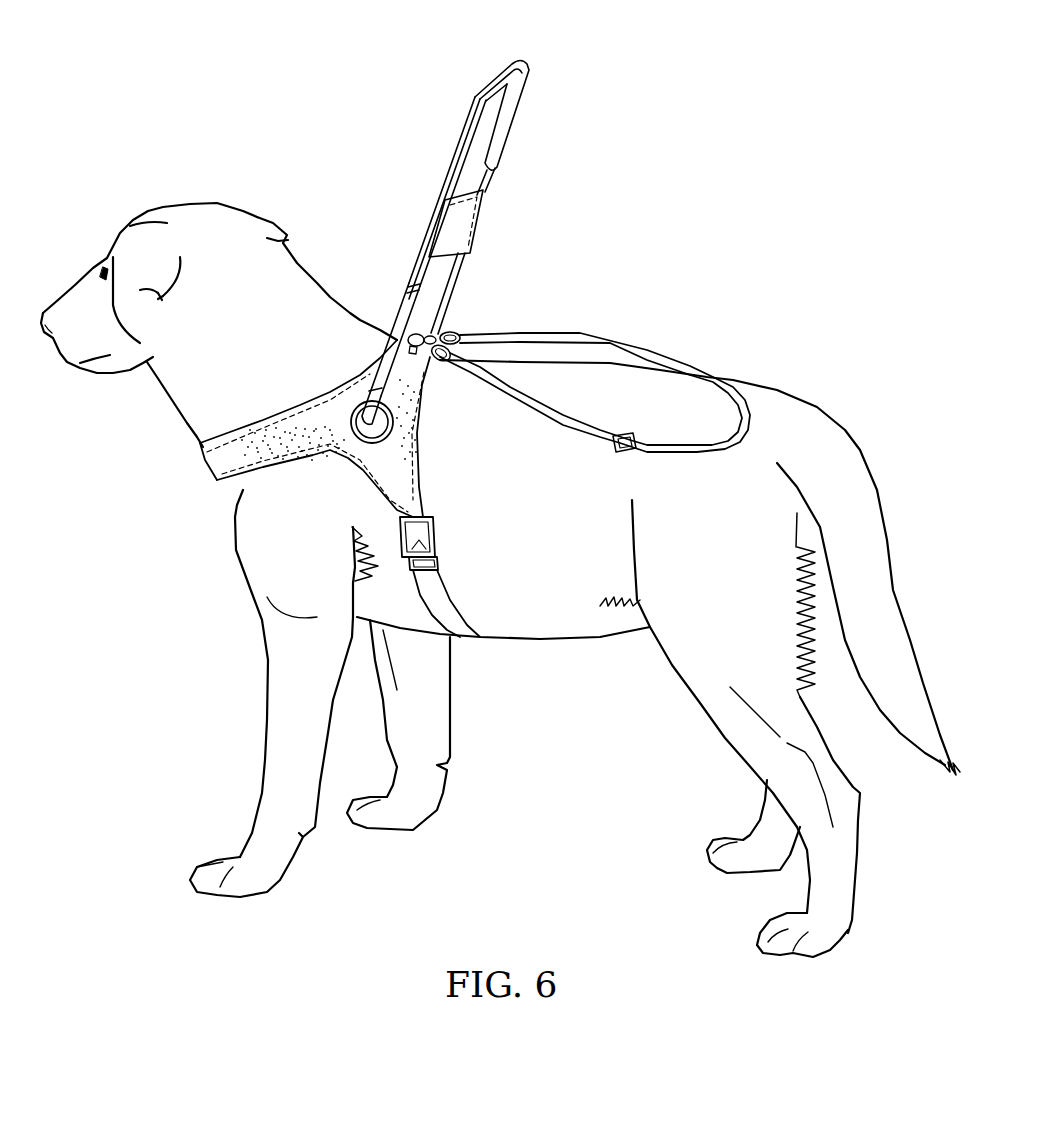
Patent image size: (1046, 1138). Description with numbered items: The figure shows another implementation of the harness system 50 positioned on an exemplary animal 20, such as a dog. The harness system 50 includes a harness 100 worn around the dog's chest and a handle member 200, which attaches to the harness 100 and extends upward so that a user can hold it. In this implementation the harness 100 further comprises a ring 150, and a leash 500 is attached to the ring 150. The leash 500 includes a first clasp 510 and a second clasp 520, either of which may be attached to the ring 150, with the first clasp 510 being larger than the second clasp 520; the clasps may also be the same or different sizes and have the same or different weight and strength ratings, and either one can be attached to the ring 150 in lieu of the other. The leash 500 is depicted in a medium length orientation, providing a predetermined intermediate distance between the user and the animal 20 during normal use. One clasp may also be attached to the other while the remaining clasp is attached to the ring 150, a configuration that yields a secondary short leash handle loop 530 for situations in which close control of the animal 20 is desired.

The animal 20 is at (191, 200).
The harness system 50 is at (436, 322).
The harness 100 is at (203, 459).
The ring 150 is at (400, 325).
The handle member 200 is at (505, 75).
The leash 500 is at (589, 370).
The first clasp 510 is at (450, 328).
The second clasp 520 is at (442, 362).
The secondary short leash handle loop 530 is at (512, 392).